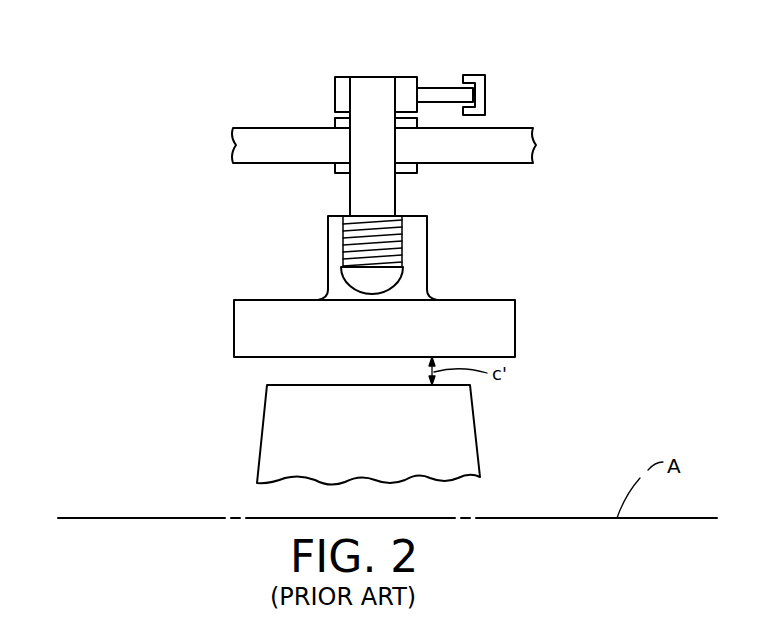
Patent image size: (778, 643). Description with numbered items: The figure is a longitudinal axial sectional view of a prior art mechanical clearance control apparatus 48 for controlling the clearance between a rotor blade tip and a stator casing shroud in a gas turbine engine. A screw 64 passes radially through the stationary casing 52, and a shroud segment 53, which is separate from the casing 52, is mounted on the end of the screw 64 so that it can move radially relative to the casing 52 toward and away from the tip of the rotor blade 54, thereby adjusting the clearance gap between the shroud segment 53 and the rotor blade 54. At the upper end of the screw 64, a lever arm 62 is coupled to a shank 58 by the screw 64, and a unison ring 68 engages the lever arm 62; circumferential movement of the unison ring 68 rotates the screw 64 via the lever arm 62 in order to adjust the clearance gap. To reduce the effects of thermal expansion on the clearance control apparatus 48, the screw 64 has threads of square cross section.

The clearance control apparatus 48 is at (657, 73).
The stationary casing 52 is at (384, 145).
The shroud segment 53 is at (374, 328).
The rotor blade 54 is at (368, 435).
The shank 58 is at (415, 235).
The lever arm 62 is at (452, 87).
The screw 64 is at (376, 146).
The unison ring 68 is at (486, 73).